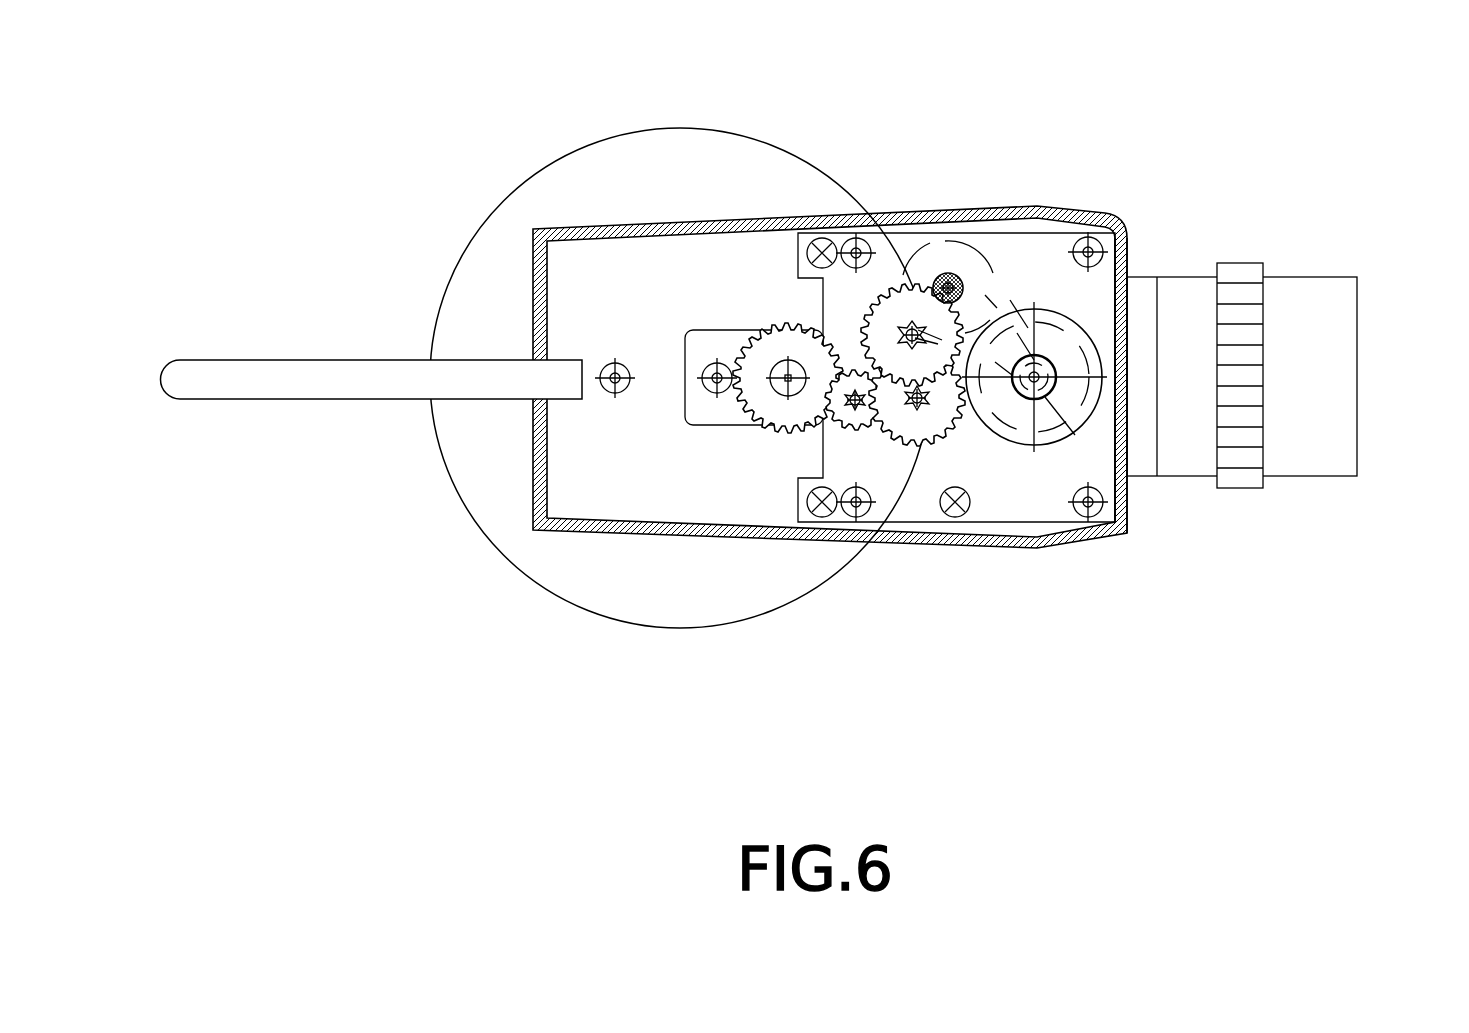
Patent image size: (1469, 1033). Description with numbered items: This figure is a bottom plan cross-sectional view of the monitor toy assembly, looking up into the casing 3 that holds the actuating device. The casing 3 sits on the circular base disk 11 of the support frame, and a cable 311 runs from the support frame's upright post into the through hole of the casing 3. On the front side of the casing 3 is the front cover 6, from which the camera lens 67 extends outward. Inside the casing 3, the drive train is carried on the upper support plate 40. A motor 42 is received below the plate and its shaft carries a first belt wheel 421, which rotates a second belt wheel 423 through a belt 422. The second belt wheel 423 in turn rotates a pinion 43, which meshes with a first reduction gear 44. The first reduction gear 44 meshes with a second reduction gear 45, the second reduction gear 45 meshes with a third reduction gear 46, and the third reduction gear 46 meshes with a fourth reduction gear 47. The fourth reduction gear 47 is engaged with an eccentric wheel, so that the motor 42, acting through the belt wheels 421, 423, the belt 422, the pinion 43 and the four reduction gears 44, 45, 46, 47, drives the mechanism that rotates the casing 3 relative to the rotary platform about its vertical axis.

The casing 3 is at (657, 535).
The front cover 6 is at (1123, 243).
The base disk 11 is at (657, 153).
The cable 311 is at (297, 368).
The upper support plate 40 is at (1007, 500).
The motor 42 is at (1047, 437).
The first belt wheel 421 is at (1047, 387).
The belt 422 is at (1010, 300).
The second belt wheel 423 is at (978, 278).
The pinion 43 is at (952, 272).
The first reduction gear 44 is at (888, 292).
The second reduction gear 45 is at (923, 453).
The third reduction gear 46 is at (870, 457).
The fourth reduction gear 47 is at (777, 413).
The camera lens 67 is at (1345, 345).